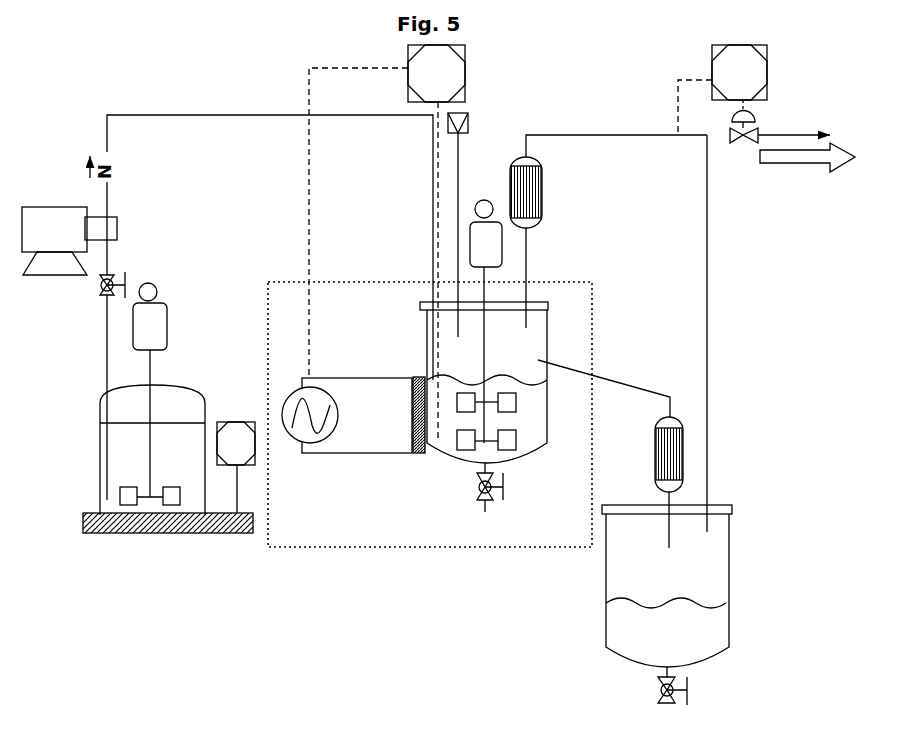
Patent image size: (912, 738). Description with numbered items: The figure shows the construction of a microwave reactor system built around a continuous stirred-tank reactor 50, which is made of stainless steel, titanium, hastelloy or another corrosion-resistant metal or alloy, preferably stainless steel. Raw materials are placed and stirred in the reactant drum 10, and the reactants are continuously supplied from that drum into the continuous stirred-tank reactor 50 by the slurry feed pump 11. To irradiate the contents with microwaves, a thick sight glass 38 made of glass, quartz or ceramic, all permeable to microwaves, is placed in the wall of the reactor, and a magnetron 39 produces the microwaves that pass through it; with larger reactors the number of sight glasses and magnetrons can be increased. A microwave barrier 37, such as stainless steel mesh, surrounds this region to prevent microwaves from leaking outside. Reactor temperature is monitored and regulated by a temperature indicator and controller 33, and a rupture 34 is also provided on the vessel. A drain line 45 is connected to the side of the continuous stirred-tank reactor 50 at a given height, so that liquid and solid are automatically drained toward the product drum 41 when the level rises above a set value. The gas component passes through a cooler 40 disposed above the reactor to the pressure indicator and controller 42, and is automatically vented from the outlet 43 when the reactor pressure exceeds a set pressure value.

The reactant drum 10 is at (125, 463).
The slurry feed pump 11 is at (50, 233).
The temperature indicator and controller 33 is at (473, 68).
The rupture 34 is at (473, 118).
The microwave barrier 37 is at (347, 548).
The sight glass 38 is at (418, 460).
The magnetron 39 is at (320, 388).
The cooler 40 is at (545, 198).
The product drum 41 is at (690, 575).
The pressure indicator and controller 42 is at (770, 59).
The outlet 43 is at (807, 130).
The drain line 45 is at (625, 380).
The continuous stirred-tank reactor 50 is at (513, 353).